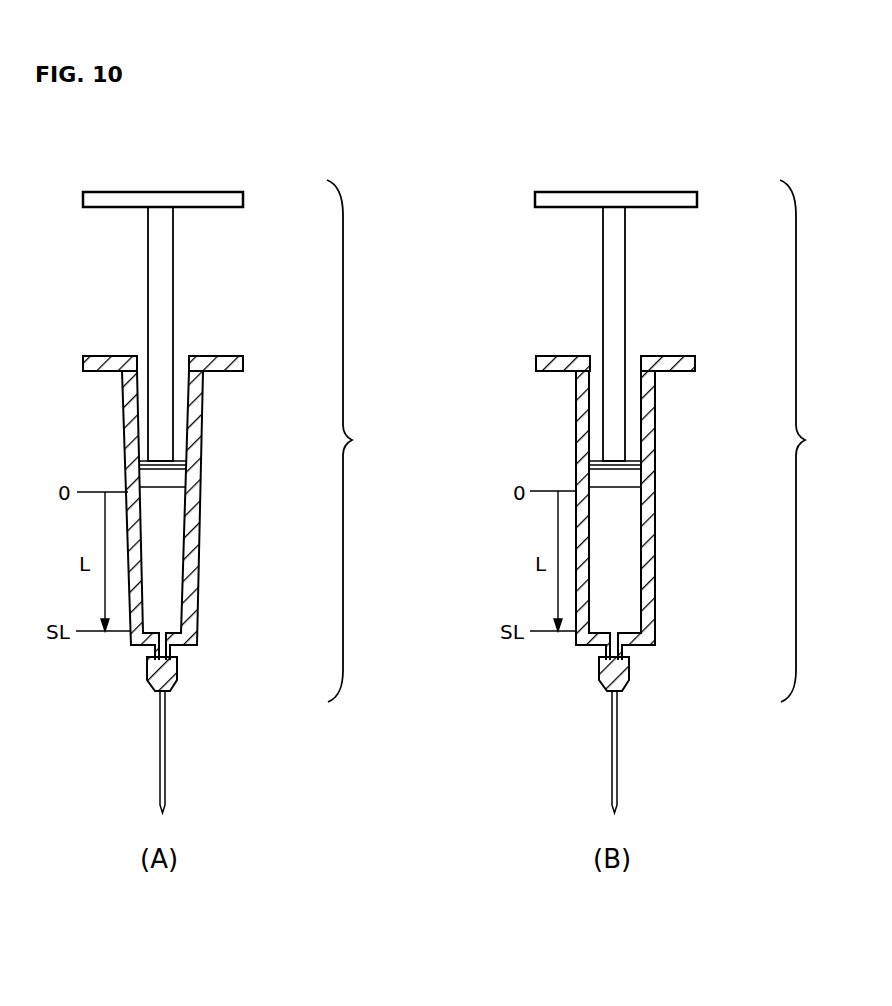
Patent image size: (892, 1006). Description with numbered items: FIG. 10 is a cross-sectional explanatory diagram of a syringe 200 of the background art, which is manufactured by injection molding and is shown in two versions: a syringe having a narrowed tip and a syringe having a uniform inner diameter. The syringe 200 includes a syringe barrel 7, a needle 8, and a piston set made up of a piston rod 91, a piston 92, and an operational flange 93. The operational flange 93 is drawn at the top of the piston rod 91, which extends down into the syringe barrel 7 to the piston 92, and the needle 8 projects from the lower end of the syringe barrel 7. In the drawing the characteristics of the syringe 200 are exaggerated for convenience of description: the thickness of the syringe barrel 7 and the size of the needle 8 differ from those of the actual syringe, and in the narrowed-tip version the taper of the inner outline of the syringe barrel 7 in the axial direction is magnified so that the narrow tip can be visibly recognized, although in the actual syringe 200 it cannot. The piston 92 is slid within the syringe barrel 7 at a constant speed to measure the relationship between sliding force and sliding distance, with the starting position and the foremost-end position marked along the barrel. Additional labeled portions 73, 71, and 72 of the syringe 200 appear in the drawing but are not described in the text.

The operational flange 93 is at (108, 199).
The piston rod 91 is at (160, 308).
The barrel flange 73 is at (103, 360).
The syringe barrel 71 is at (192, 410).
The piston 92 is at (175, 478).
The nozzle / tip 72 is at (173, 650).
The syringe barrel 7 is at (280, 333).
The needle 8 is at (167, 738).
The syringe 200 is at (586, 441).